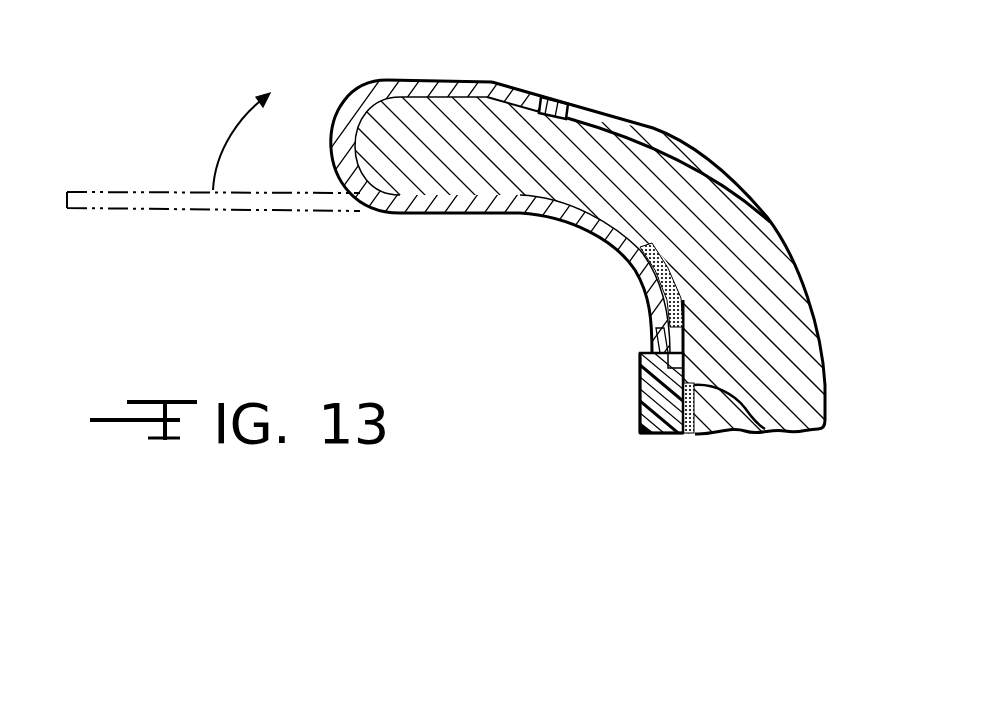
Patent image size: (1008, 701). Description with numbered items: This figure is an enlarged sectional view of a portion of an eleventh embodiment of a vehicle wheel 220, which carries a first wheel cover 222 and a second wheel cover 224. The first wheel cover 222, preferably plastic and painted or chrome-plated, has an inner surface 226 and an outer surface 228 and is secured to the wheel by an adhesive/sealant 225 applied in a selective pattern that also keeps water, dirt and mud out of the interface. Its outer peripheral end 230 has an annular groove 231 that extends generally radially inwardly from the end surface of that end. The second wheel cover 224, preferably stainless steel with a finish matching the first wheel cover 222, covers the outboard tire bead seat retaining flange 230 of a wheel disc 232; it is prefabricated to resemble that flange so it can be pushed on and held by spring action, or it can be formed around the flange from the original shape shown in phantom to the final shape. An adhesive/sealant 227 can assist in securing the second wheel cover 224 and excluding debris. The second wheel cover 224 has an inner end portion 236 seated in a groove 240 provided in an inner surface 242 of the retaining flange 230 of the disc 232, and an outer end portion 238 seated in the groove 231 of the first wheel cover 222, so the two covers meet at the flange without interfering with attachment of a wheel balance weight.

The vehicle wheel 220 is at (528, 275).
The first wheel cover 222 is at (640, 408).
The second wheel cover 224 is at (383, 215).
The adhesive/sealant 225 is at (690, 433).
The inner surface 226 is at (763, 433).
The adhesive/sealant 227 is at (678, 300).
The outer surface 228 is at (640, 427).
The outer peripheral end 230 is at (717, 193).
The annular groove 231 is at (640, 367).
The wheel disc 232 is at (815, 260).
The inner end portion 236 is at (512, 97).
The outer end portion 238 is at (158, 213).
The groove 240 is at (543, 103).
The inner surface 242 is at (825, 380).